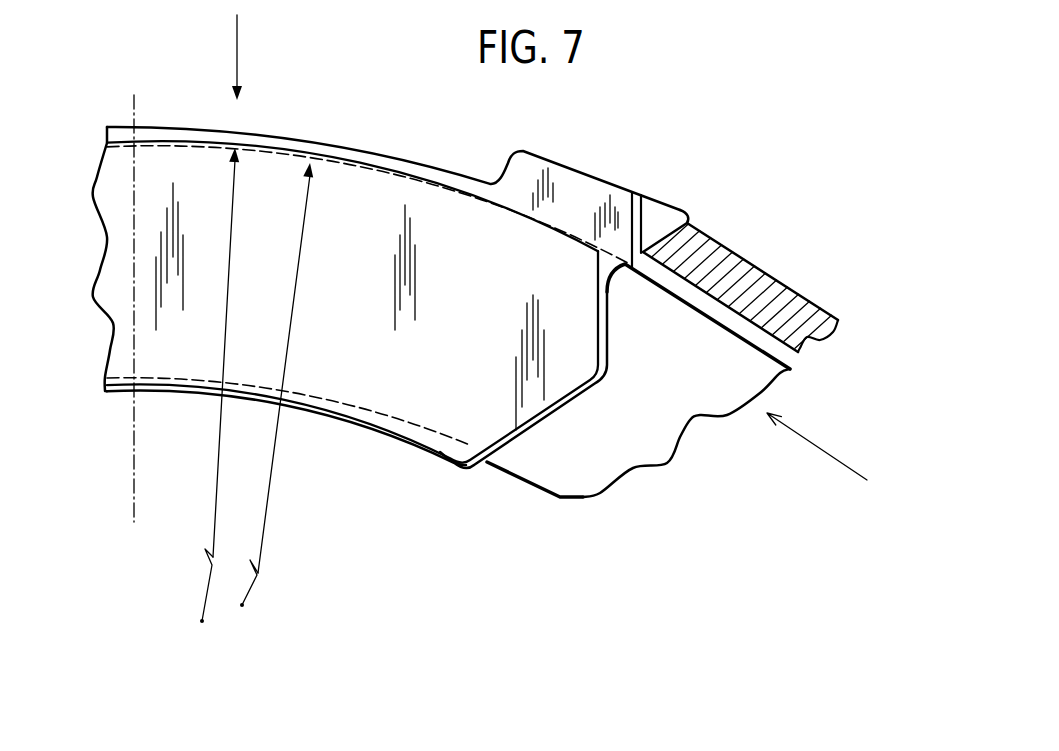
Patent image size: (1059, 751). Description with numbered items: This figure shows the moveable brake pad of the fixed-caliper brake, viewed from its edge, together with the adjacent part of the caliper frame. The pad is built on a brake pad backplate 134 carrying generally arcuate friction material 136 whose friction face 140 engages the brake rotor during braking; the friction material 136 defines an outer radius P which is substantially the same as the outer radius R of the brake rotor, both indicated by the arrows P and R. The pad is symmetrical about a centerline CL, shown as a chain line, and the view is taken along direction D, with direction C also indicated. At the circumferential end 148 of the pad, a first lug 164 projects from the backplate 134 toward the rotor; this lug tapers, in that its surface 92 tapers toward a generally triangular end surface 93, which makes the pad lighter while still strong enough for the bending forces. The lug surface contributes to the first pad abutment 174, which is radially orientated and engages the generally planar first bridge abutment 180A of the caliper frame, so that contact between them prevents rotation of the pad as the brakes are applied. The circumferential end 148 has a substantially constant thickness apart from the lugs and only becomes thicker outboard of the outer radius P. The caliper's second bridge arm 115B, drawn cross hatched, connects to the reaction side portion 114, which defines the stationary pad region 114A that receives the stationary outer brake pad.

The brake pad backplate 134 is at (414, 160).
The surface 92 is at (637, 208).
The first bridge abutment 180A is at (662, 241).
The end surface 93 is at (653, 208).
The first lug 164 is at (671, 212).
The first pad abutment 174 is at (672, 236).
The second bridge arm 115B is at (722, 258).
The reaction side portion 114 is at (800, 284).
The friction face 140 is at (357, 370).
The stationary pad region 114A is at (453, 472).
The friction material 136 is at (532, 397).
The circumferential end 148 is at (608, 368).
The direction D is at (247, 57).
The outer radius of the friction material P is at (218, 483).
The outer radius of the brake rotor R is at (267, 523).
The direction C is at (817, 446).
The centerline CL is at (133, 478).